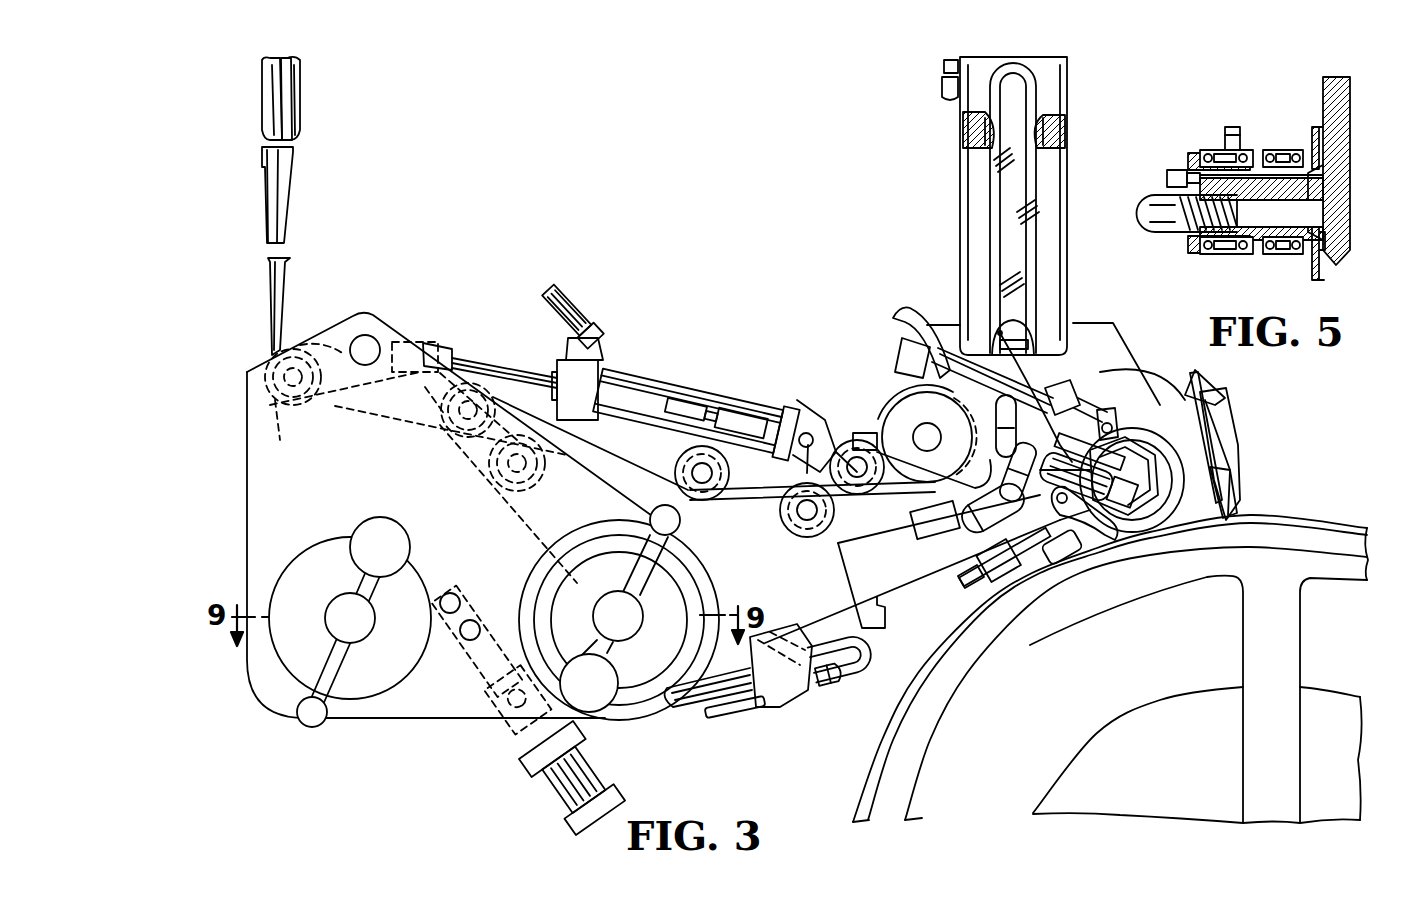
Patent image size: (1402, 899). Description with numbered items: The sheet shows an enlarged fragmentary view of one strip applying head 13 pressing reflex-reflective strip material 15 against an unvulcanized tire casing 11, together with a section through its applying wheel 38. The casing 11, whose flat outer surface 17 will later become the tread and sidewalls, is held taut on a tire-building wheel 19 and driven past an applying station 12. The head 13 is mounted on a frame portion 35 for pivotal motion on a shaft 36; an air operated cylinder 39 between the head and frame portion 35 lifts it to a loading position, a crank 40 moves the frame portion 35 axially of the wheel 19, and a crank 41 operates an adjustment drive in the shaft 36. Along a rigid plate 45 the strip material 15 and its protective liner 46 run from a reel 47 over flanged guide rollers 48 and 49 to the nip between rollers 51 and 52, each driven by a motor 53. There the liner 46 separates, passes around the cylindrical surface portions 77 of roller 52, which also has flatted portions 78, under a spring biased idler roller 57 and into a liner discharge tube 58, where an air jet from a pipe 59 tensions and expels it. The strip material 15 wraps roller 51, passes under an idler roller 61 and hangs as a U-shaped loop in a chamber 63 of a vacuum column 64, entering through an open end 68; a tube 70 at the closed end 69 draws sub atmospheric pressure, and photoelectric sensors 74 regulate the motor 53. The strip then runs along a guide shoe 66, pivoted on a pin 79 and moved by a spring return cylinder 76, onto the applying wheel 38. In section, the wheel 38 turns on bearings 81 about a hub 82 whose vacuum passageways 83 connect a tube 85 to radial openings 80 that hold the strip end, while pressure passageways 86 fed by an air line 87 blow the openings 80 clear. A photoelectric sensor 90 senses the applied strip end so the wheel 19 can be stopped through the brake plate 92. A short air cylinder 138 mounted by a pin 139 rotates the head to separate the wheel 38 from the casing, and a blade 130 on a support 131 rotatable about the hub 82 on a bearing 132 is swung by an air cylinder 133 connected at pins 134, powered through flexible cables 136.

In FIG. 3, the tire casing 11 is at (892, 738).
In FIG. 3, the applying station 12 is at (1180, 522).
In FIG. 3, the first strip applying head 13 is at (1118, 333).
In FIG. 3, the strip material 15 is at (282, 248).
In FIG. 5, the strip material 15 is at (1322, 282).
In FIG. 3, the outer surface 17 is at (855, 803).
In FIG. 3, the tire-building wheel 19 is at (870, 772).
In FIG. 3, the frame portion 35 is at (437, 705).
In FIG. 3, the shaft 36 is at (622, 631).
In FIG. 3, the applying wheel 38 is at (1145, 523).
In FIG. 3, the air operated cylinder 39 is at (667, 387).
In FIG. 3, the crank 40 is at (314, 727).
In FIG. 3, the crank 41 is at (680, 523).
In FIG. 3, the plate 45 is at (777, 593).
In FIG. 3, the protective liner 46 is at (836, 618).
In FIG. 3, the reel 47 is at (276, 97).
In FIG. 3, the guide rollers 48 is at (281, 160).
In FIG. 3, the guide rollers 49 is at (288, 408).
In FIG. 3, the roller 51 is at (957, 438).
In FIG. 3, the roller 52 is at (985, 540).
In FIG. 3, the motor 53 is at (922, 432).
In FIG. 3, the idler roller 57 is at (1030, 503).
In FIG. 3, the liner discharge tube 58 is at (777, 689).
In FIG. 3, the pipe 59 is at (856, 668).
In FIG. 3, the idler roller 61 is at (1018, 440).
In FIG. 3, the chamber 63 is at (998, 184).
In FIG. 3, the vacuum column 64 is at (1004, 205).
In FIG. 3, the guide shoe 66 is at (1093, 550).
In FIG. 3, the open end 68 is at (998, 332).
In FIG. 3, the closed end 69 is at (950, 60).
In FIG. 3, the tube 70 is at (940, 92).
In FIG. 3, the photoelectric sensors 74 is at (968, 133).
In FIG. 3, the spring return air operated cylinder 76 is at (1027, 563).
In FIG. 3, the cylindrical peripheral surface portions 77 is at (975, 520).
In FIG. 3, the flatted peripheral surface portions 78 is at (993, 535).
In FIG. 3, the pin 79 is at (1070, 533).
In FIG. 5, the radial openings 80 is at (1314, 128).
In FIG. 5, the bearings 81 is at (1260, 255).
In FIG. 5, the hub 82 is at (1342, 190).
In FIG. 5, the vacuum passageways 83 is at (1300, 225).
In FIG. 3, the tube 85 is at (1062, 457).
In FIG. 5, the tube 85 is at (1157, 235).
In FIG. 5, the pressure passageways 86 is at (1258, 174).
In FIG. 3, the air line 87 is at (1103, 410).
In FIG. 5, the air line 87 is at (1170, 170).
In FIG. 3, the photoelectric sensor 90 is at (1063, 543).
In FIG. 3, the circular plate 92 is at (1105, 738).
In FIG. 3, the blade 130 is at (1218, 510).
In FIG. 3, the support 131 is at (1228, 418).
In FIG. 5, the bearing 132 is at (1207, 150).
In FIG. 3, the air cylinder 133 is at (990, 385).
In FIG. 3, the pins 134 is at (1142, 395).
In FIG. 5, the pins 134 is at (1236, 127).
In FIG. 3, the flexible electrical cables 136 is at (1193, 378).
In FIG. 3, the air cylinder 138 is at (552, 782).
In FIG. 3, the pin 139 is at (475, 655).